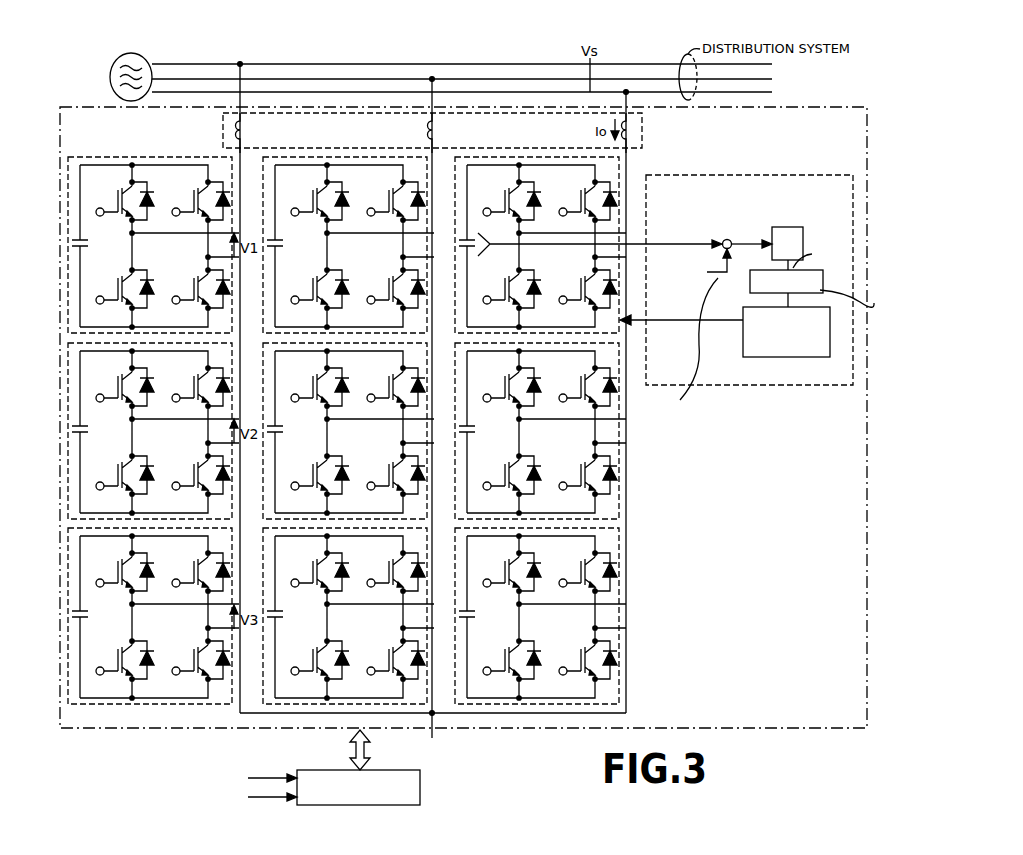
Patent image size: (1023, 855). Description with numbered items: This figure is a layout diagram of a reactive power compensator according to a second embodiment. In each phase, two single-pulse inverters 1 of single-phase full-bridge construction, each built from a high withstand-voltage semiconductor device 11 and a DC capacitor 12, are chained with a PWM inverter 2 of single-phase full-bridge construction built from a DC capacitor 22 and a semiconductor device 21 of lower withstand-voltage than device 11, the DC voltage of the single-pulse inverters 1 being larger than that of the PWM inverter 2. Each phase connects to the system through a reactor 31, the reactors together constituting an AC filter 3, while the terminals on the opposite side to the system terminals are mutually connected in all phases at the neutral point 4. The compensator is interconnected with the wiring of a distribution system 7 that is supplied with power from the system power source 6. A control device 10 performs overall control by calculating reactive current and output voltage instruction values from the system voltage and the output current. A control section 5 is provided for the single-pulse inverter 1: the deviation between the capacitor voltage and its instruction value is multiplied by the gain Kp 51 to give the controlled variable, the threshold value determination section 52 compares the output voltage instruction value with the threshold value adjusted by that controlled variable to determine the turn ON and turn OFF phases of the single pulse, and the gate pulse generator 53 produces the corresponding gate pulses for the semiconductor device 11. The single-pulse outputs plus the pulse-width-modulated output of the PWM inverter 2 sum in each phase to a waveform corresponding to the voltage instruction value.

The single-pulse inverter 1 is at (83, 152).
The PWM inverter 2 is at (138, 602).
The AC filter 3 is at (224, 130).
The neutral point 4 is at (432, 419).
The control section 5 is at (755, 175).
The system power source 6 is at (110, 77).
The distribution system 7 is at (200, 63).
The control device 10 is at (420, 786).
The high withstand-voltage semiconductor device 11 is at (156, 240).
The DC capacitor 12 is at (97, 233).
The semiconductor device 21 is at (154, 612).
The DC capacitor 22 is at (97, 605).
The reactor 31 is at (243, 135).
The gain Kp 51 is at (788, 227).
The threshold value determination section 52 is at (824, 283).
The gate pulse generator 53 is at (743, 351).